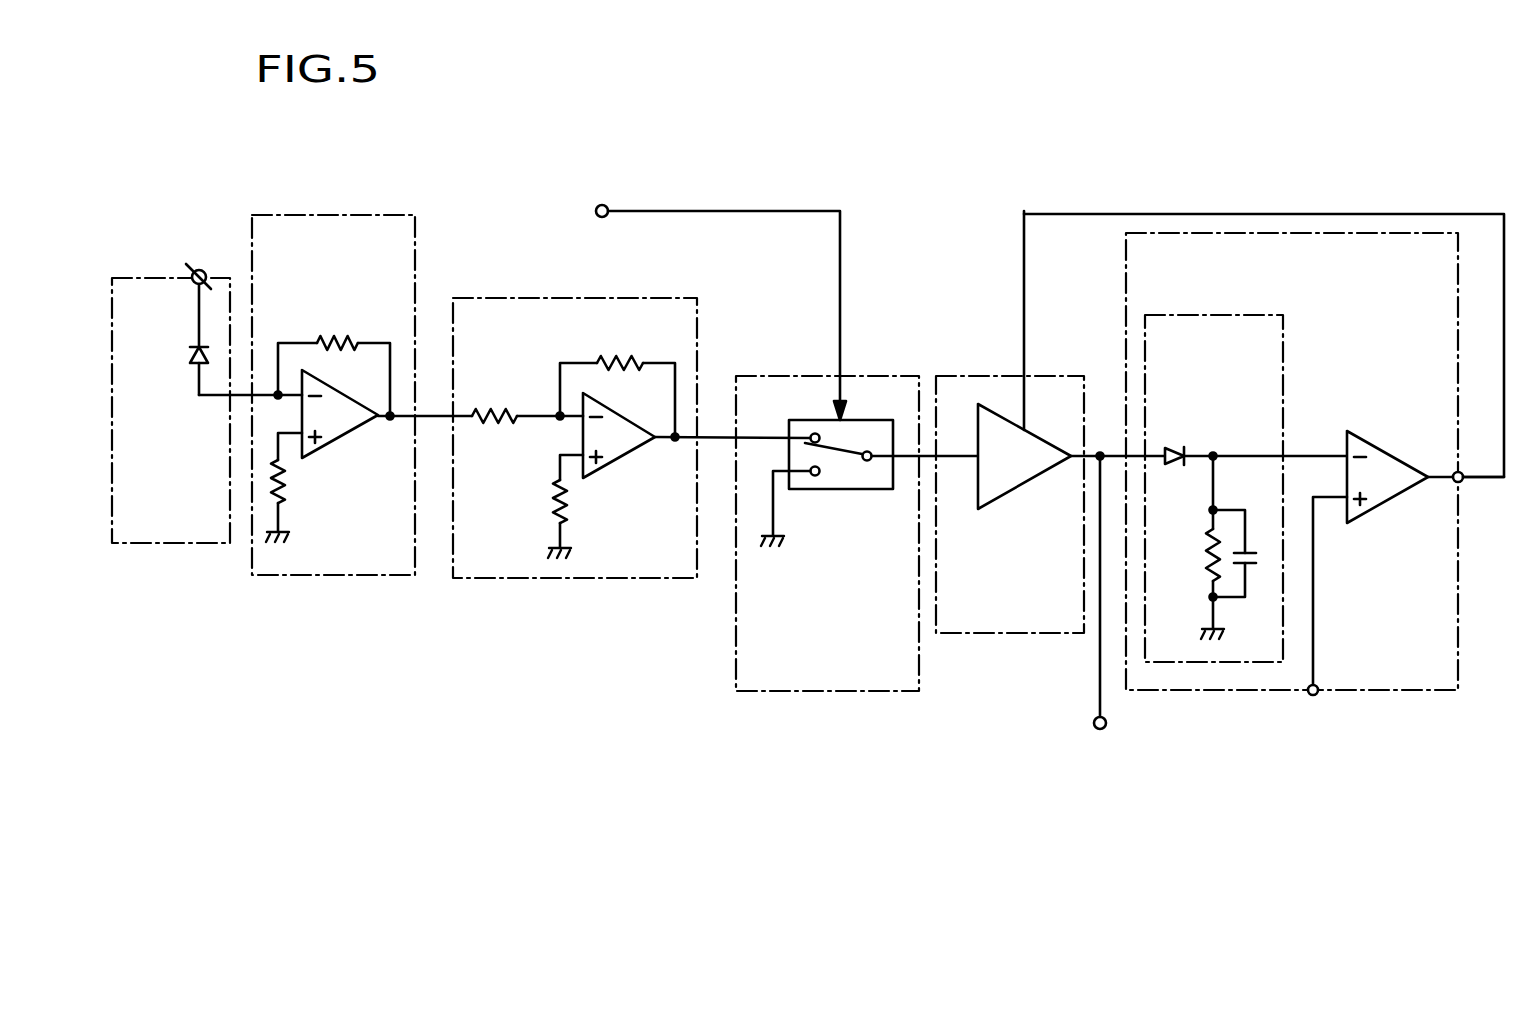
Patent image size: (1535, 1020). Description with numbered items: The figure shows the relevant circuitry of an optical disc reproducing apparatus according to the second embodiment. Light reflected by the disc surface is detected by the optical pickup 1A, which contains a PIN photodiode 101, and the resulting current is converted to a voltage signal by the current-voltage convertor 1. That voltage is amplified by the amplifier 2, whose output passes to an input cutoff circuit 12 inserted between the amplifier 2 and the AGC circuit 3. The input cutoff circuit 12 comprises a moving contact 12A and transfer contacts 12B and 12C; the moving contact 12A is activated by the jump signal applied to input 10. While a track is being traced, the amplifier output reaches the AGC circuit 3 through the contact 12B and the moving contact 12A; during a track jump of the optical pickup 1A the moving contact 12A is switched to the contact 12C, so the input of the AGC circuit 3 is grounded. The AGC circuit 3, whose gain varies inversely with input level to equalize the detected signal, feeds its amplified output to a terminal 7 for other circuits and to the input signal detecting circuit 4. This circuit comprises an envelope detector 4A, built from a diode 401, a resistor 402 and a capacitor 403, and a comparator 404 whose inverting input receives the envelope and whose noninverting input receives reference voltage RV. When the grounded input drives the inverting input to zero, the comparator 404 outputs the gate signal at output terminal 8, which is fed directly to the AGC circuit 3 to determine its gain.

The optical pickup 1A is at (128, 545).
The PIN photodiode 101 is at (196, 365).
The current-voltage convertor 1 is at (272, 215).
The amplifier 2 is at (522, 298).
The input 10 is at (602, 204).
The input cutoff circuit 12 is at (857, 533).
The moving contact 12A is at (842, 452).
The transfer contact 12B is at (815, 431).
The transfer contact 12C is at (815, 477).
The AGC circuit 3 is at (940, 640).
The terminal 7 is at (1106, 723).
The input signal detecting circuit 4 is at (1124, 290).
The envelope detector 4A is at (1246, 488).
The diode 401 is at (1170, 454).
The resistor 402 is at (1208, 547).
The capacitor 403 is at (1250, 550).
The comparator 404 is at (1392, 498).
The output terminal 8 is at (1462, 484).